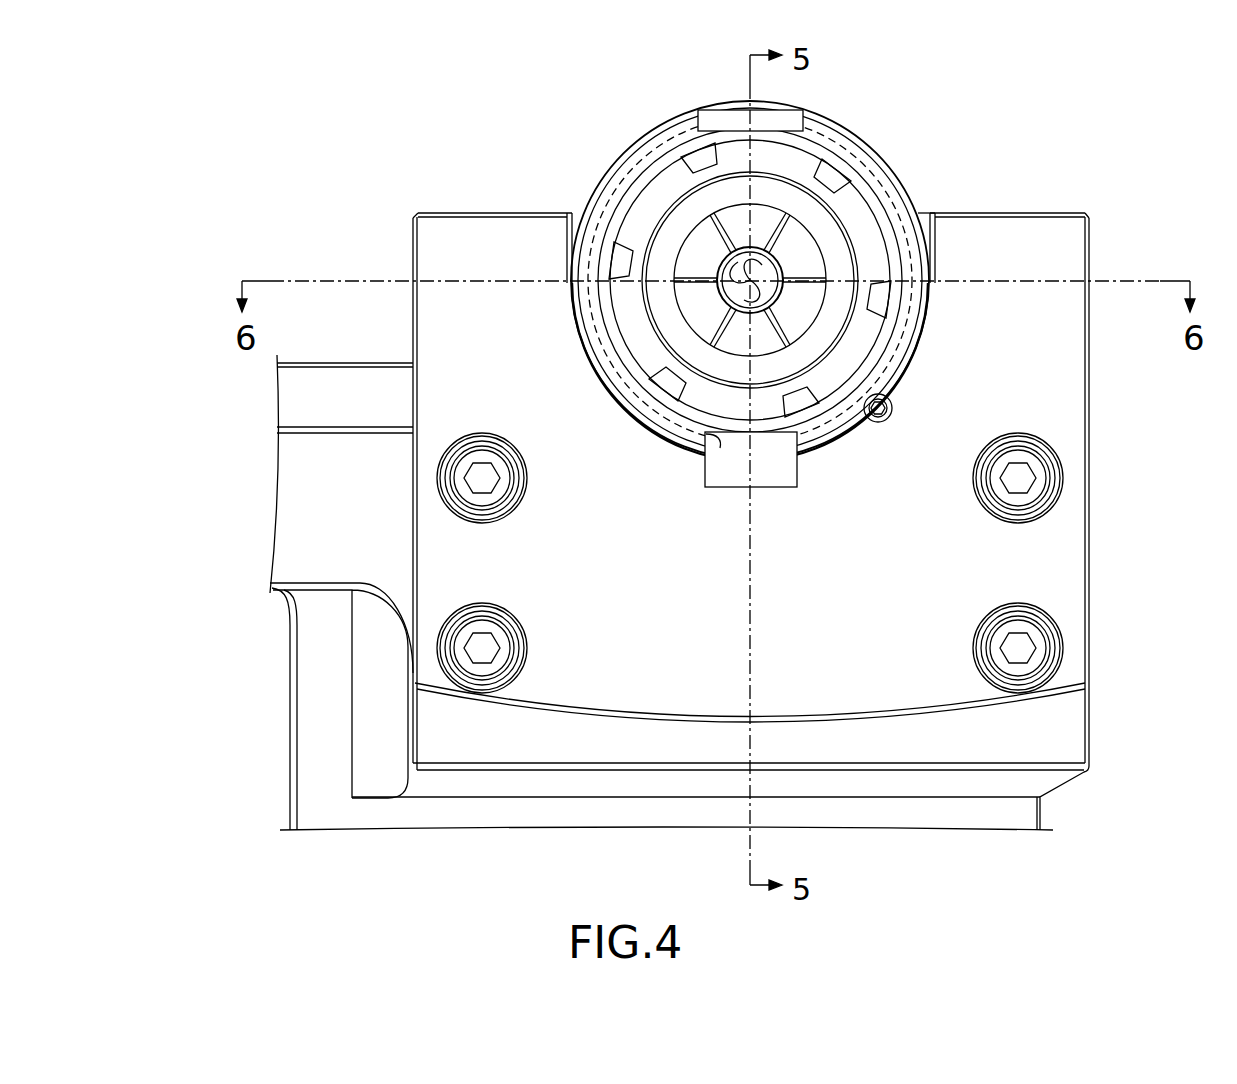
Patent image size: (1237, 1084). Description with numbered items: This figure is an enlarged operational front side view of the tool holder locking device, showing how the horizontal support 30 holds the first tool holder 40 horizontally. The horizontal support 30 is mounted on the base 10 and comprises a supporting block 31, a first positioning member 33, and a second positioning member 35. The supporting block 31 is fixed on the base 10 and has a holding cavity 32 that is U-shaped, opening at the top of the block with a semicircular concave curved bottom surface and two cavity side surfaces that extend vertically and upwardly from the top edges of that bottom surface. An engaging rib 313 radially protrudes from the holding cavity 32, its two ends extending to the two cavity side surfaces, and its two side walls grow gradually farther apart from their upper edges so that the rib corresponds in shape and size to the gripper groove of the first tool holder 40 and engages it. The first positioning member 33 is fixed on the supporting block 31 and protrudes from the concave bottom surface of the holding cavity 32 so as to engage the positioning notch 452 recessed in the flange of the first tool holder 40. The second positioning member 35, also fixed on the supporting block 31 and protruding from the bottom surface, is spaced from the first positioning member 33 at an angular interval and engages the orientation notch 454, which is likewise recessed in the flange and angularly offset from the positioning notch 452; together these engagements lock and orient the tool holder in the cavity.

The base 10 is at (285, 731).
The horizontal support 30 is at (1112, 545).
The supporting block 31 is at (1053, 205).
The holding cavity 32 is at (580, 212).
The first positioning member 33 is at (773, 470).
The second positioning member 35 is at (882, 421).
The first tool holder 40 is at (612, 140).
The engaging rib 313 is at (920, 215).
The positioning notch 452 is at (712, 440).
The orientation notch 454 is at (893, 405).